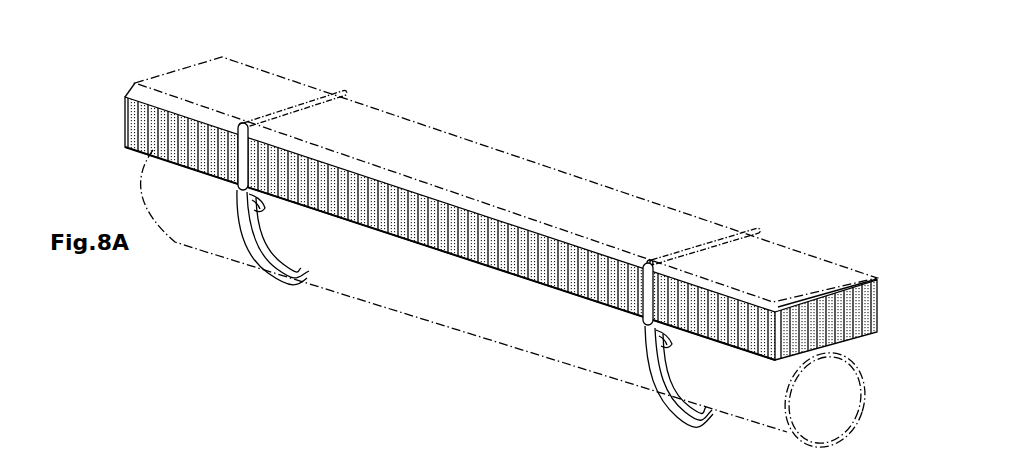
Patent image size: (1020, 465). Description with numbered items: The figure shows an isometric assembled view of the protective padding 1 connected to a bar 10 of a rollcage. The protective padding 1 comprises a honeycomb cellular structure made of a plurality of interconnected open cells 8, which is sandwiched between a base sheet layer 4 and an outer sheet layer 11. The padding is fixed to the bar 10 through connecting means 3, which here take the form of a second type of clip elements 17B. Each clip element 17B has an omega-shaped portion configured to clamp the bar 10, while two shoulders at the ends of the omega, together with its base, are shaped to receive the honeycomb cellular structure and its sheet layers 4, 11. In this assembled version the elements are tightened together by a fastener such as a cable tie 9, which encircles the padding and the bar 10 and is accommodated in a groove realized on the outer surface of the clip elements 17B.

The protective padding 1 is at (481, 241).
The connecting means 3 is at (517, 222).
The base sheet layer 4 is at (467, 252).
The open cells 8 is at (148, 134).
The cable tie 9 is at (308, 102).
The bar 10 is at (180, 223).
The outer sheet layer 11 is at (413, 152).
The clip element 17B is at (260, 233).